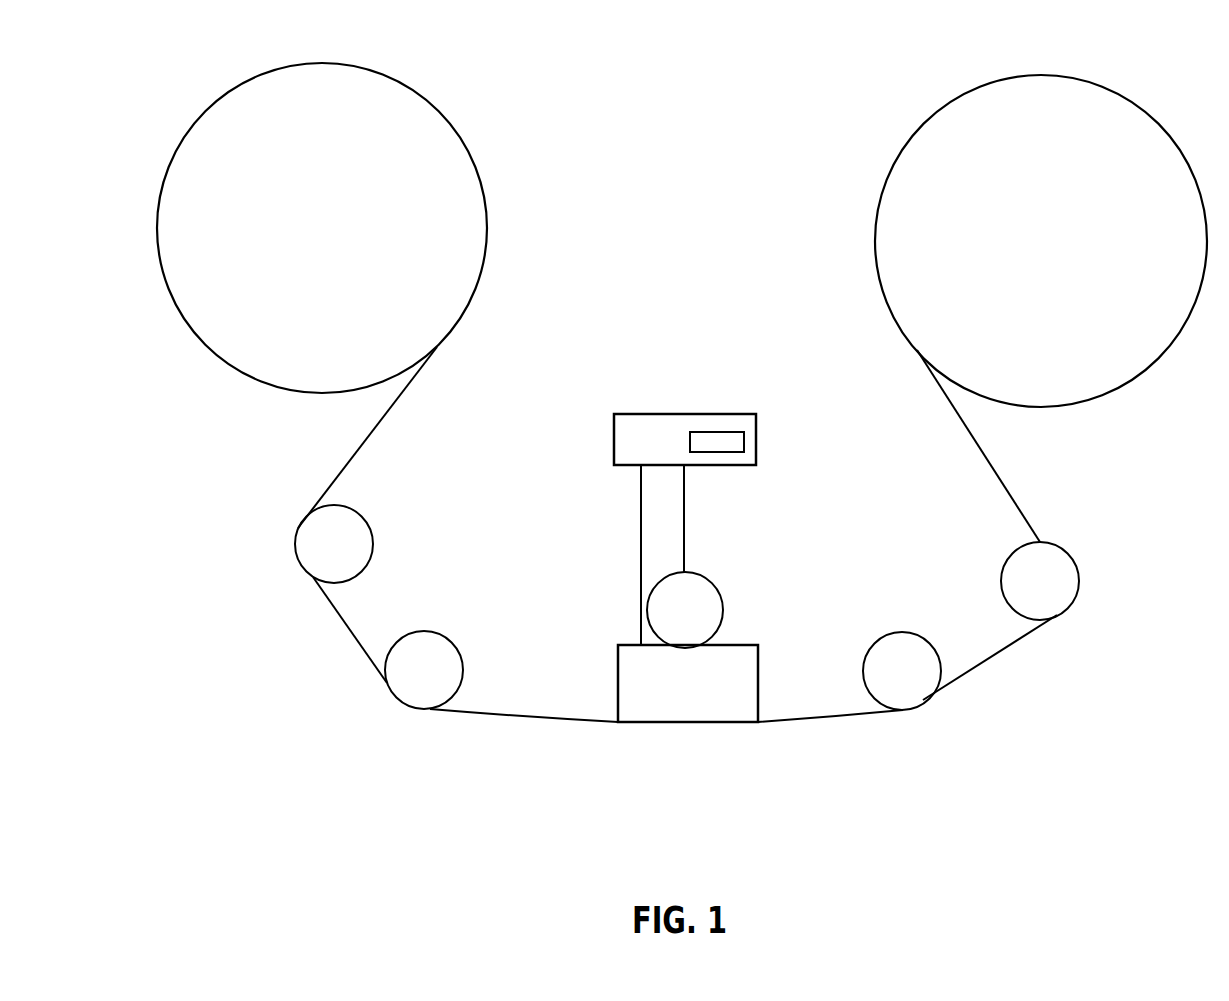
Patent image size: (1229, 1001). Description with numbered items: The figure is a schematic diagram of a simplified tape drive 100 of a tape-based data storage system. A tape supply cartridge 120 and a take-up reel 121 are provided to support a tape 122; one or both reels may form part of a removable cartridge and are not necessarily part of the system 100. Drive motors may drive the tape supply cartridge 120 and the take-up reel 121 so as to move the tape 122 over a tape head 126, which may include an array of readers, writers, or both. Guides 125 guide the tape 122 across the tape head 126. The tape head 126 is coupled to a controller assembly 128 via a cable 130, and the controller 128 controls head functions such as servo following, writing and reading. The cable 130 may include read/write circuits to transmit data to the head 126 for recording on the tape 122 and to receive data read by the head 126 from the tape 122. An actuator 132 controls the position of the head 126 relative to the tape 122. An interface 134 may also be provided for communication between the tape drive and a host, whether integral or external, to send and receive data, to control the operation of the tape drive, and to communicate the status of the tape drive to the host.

The tape drive 100 is at (278, 458).
The tape supply cartridge 120 is at (483, 192).
The take-up reel 121 is at (1148, 370).
The tape 122 is at (528, 716).
The guides 125 is at (424, 631).
The tape head 126 is at (758, 682).
The controller assembly 128 is at (684, 414).
The cable 130 is at (641, 605).
The actuator 132 is at (712, 580).
The interface 134 is at (731, 432).